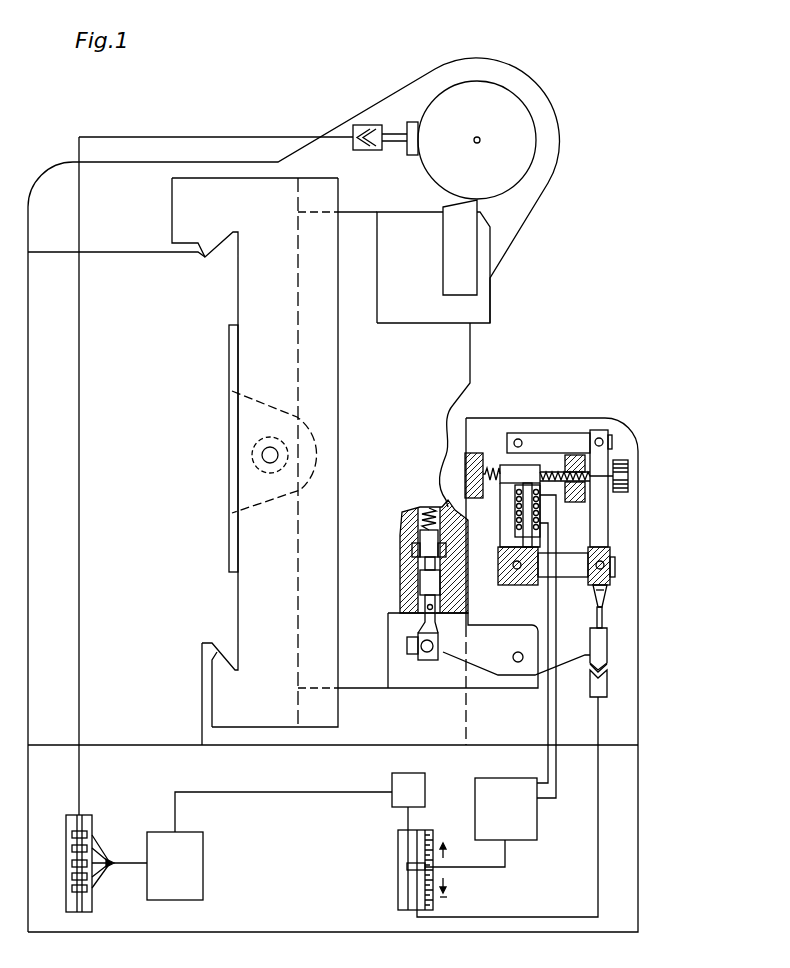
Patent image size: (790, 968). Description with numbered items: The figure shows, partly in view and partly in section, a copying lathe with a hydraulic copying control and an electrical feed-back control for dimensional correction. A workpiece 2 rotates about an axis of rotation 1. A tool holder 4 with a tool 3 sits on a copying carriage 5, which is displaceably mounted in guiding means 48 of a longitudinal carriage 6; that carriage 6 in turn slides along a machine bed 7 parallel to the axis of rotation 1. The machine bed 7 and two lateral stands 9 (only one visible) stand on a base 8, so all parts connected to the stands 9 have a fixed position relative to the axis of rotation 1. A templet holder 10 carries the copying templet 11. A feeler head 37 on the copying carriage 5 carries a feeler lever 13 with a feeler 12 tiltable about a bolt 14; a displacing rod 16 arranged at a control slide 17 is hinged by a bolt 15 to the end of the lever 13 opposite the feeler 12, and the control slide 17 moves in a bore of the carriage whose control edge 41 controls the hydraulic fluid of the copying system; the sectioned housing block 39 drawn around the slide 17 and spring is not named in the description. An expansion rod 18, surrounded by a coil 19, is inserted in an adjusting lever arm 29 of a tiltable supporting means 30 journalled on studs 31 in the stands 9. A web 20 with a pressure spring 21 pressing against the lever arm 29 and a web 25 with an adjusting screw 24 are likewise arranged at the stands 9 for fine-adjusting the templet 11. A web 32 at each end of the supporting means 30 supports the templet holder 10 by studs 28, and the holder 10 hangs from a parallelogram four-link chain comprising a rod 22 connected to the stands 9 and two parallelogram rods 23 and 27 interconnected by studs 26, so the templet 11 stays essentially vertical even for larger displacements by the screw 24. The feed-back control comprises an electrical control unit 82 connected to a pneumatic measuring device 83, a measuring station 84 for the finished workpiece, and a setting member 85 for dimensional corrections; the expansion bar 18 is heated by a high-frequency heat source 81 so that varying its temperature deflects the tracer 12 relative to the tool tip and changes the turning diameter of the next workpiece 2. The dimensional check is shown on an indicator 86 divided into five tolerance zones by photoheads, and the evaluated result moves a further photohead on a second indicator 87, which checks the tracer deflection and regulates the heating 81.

The axis of rotation 1 is at (480, 138).
The workpiece 2 is at (508, 155).
The tool 3 is at (463, 247).
The tool holder 4 is at (421, 267).
The copying carriage 5 is at (409, 364).
The longitudinal slide or carriage 6 is at (278, 366).
The machine bed 7 is at (150, 369).
The base 8 is at (343, 784).
The lateral stands 9 is at (516, 721).
The templet holder 10 is at (608, 582).
The copying templet 11 is at (601, 610).
The feeler 12 is at (605, 652).
The feeler lever 13 is at (606, 690).
The bolt 14 is at (520, 661).
The bolt 15 is at (417, 635).
The displacing rod 16 is at (420, 610).
The control slide 17 is at (430, 588).
The expansion rod 18 is at (540, 503).
The coil 19 is at (538, 522).
The web 20 is at (477, 454).
The pressure spring 21 is at (493, 462).
The rod 22 is at (519, 439).
The parallelogram rod 23 is at (546, 440).
The adjusting screw 24 is at (553, 470).
The web 25 is at (573, 457).
The studs 26 is at (600, 452).
The parallelogram rod 27 is at (606, 462).
The studs 28 is at (614, 565).
The adjusting lever arm 29 is at (513, 532).
The tiltable supporting means 30 is at (512, 550).
The studs 31 is at (503, 567).
The web 32 is at (528, 585).
The feeler head 37 is at (425, 682).
The housing block 39 is at (417, 518).
The control edge 41 is at (418, 552).
The guiding means 48 is at (298, 438).
The high-frequency heat source 81 is at (506, 809).
The electrical control unit 82 is at (188, 866).
The pneumatic measuring device 83 is at (607, 686).
The measuring station 84 is at (404, 128).
The setting member 85 is at (408, 801).
The indicator 86 is at (87, 825).
The second indicator 87 is at (435, 872).